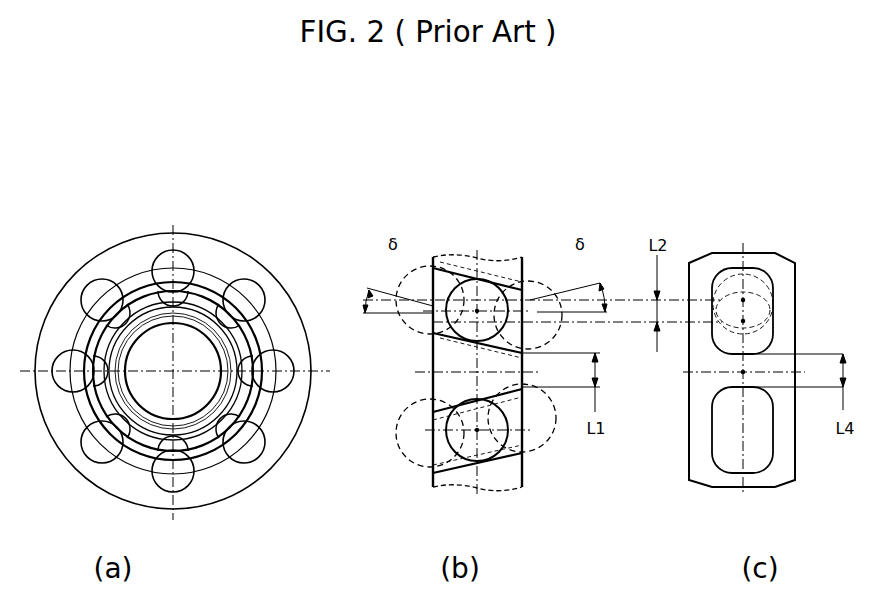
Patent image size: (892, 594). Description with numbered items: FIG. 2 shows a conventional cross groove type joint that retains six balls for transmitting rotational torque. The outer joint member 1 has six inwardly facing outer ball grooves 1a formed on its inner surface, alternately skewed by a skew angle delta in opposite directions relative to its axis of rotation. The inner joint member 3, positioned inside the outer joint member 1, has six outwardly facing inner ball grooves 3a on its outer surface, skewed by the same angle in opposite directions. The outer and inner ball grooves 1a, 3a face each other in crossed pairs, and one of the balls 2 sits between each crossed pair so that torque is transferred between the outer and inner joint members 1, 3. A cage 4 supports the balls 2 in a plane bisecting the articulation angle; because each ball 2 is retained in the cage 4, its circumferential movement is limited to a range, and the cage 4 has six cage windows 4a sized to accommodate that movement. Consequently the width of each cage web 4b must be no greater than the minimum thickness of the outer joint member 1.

The outer joint member 1 is at (152, 242).
The outer ball grooves 1a is at (130, 272).
The balls 2 is at (180, 265).
The inner joint member 3 is at (233, 280).
The inner ball grooves 3a is at (198, 265).
The cage 4 is at (258, 378).
The cage windows 4a is at (755, 440).
The cage web 4b is at (750, 367).